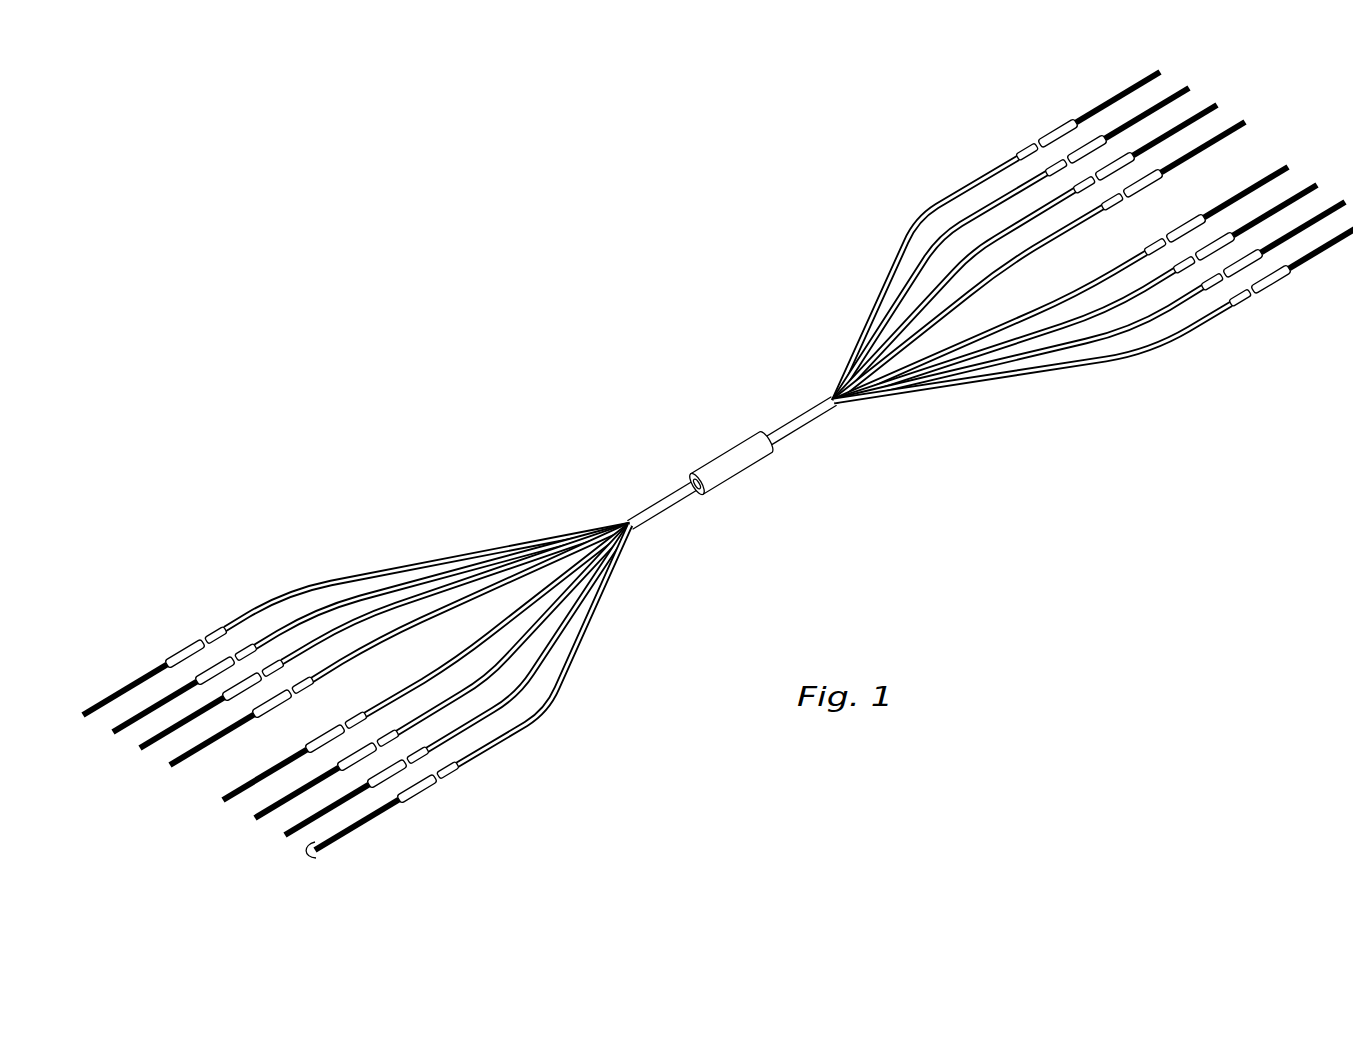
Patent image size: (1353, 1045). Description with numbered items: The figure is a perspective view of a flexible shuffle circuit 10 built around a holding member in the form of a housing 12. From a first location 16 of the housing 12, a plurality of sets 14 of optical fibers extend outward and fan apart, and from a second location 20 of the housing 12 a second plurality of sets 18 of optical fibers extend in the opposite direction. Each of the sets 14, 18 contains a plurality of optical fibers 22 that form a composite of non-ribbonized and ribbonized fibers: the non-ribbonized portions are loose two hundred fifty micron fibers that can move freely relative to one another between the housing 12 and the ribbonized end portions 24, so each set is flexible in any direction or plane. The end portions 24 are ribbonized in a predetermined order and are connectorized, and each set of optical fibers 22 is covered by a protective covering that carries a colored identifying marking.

The flexible shuffle circuit 10 is at (717, 502).
The housing 12 is at (733, 487).
The sets of optical fibers 14 is at (373, 730).
The first location 16 is at (682, 478).
The sets of optical fibers 18 is at (1093, 273).
The second location 20 is at (783, 448).
The optical fibers 22 is at (303, 857).
The end portions 24 is at (140, 665).